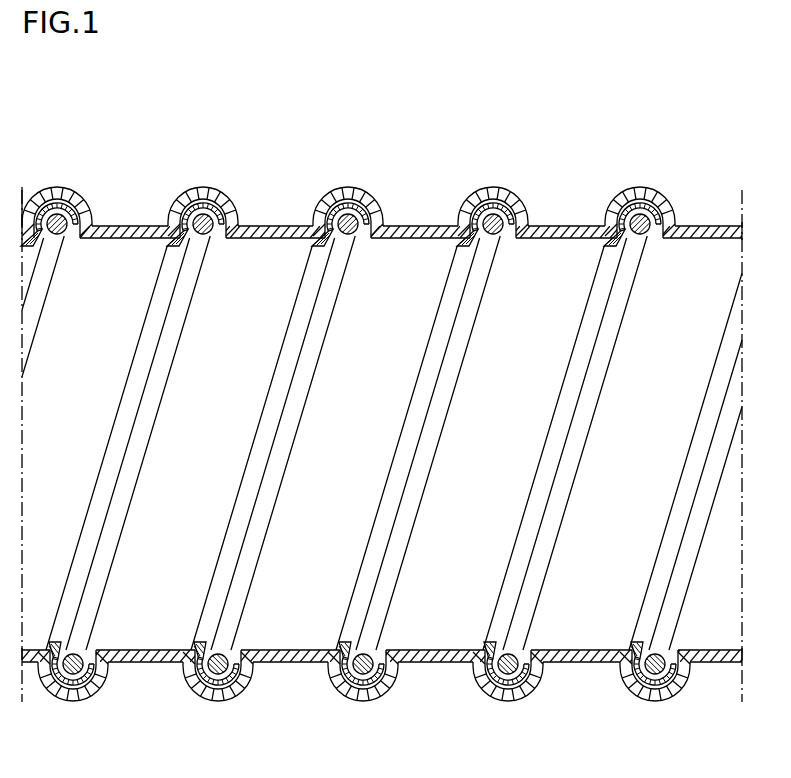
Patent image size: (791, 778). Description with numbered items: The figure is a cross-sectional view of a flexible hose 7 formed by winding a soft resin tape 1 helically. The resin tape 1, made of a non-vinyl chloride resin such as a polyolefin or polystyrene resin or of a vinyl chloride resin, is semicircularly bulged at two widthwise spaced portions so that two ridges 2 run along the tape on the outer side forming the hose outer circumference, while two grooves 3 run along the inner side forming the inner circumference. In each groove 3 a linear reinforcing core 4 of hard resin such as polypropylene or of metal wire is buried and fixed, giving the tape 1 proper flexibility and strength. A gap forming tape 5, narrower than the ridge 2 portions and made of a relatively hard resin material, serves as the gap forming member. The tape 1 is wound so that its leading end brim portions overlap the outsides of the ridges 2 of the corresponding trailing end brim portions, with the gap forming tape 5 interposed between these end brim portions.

The soft resin tape 1 is at (558, 224).
The ridge 2 is at (671, 216).
The groove 3 is at (651, 238).
The linear reinforcing core 4 is at (349, 236).
The gap forming tape 5 is at (361, 198).
The hose 7 is at (321, 178).